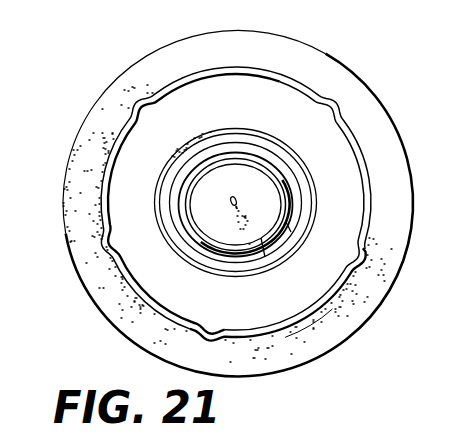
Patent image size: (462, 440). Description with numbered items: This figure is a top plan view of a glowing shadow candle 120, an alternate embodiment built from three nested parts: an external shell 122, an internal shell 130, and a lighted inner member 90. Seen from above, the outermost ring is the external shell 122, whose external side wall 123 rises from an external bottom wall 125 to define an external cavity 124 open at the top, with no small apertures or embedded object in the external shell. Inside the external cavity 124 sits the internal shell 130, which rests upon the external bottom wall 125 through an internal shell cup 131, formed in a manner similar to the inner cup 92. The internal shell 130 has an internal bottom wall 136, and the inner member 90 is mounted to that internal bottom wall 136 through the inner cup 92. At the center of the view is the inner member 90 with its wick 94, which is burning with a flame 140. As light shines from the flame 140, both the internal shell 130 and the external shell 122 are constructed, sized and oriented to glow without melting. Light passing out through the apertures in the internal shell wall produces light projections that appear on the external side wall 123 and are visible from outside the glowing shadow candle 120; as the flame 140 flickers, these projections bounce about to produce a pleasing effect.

The glowing shadow candle 120 is at (233, 194).
The external shell 122 is at (125, 68).
The external side wall 123 is at (328, 80).
The external cavity 124 is at (268, 103).
The external bottom wall 125 is at (318, 270).
The internal shell 130 is at (284, 162).
The internal shell cup 131 is at (280, 140).
The internal bottom wall 136 is at (265, 237).
The inner cup 92 is at (258, 273).
The inner member 90 is at (258, 200).
The wick 94 is at (234, 206).
The flame 140 is at (236, 198).